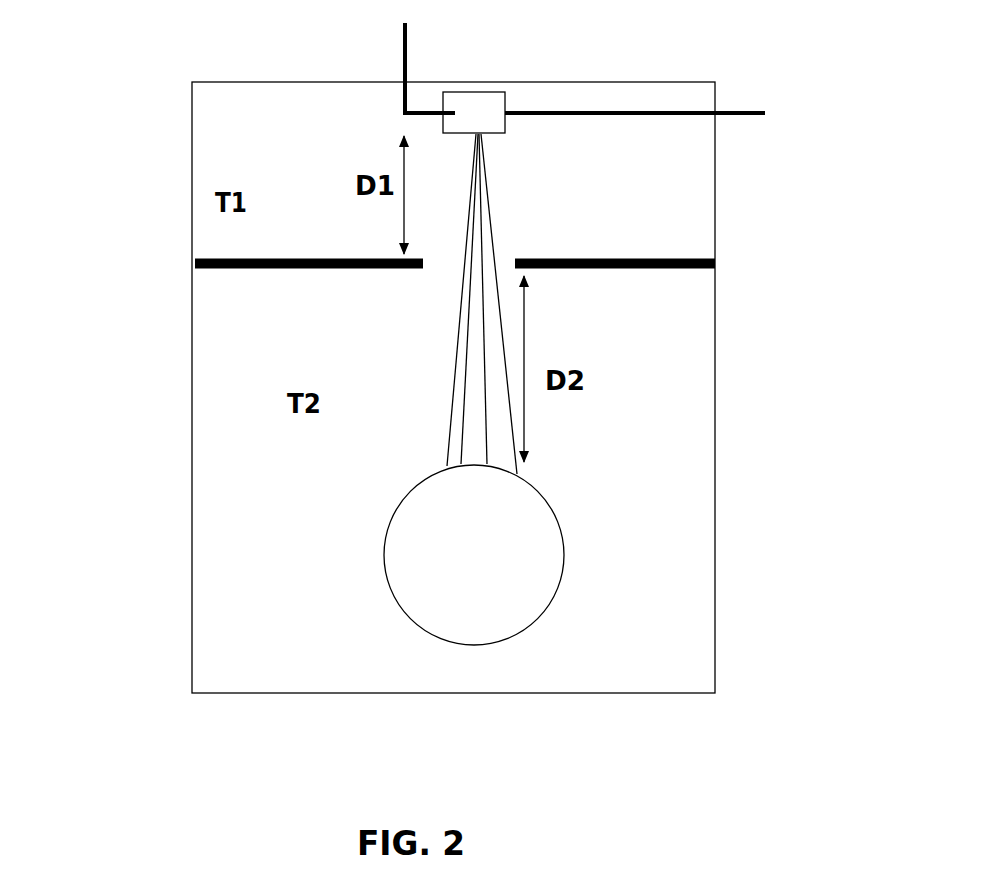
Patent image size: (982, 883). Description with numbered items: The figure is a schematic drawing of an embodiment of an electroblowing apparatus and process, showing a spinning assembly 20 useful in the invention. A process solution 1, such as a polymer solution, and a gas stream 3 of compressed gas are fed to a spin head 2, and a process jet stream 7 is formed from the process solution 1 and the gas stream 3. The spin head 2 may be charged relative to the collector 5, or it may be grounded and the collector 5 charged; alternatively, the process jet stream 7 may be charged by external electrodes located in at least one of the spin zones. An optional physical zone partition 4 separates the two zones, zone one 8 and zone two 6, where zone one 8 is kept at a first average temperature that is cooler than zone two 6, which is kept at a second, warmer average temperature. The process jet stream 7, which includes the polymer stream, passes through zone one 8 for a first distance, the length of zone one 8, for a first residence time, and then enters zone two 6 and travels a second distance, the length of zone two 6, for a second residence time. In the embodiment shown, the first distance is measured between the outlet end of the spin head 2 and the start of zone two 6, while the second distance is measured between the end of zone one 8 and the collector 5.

The spinning assembly 20 is at (192, 113).
The process solution 1 is at (402, 62).
The spin head 2 is at (487, 92).
The gas stream 3 is at (727, 108).
The physical zone partition 4 is at (727, 264).
The collector 5 is at (485, 545).
The zone 2 6 is at (322, 307).
The process jet stream 7 is at (453, 338).
The zone 1 8 is at (600, 191).